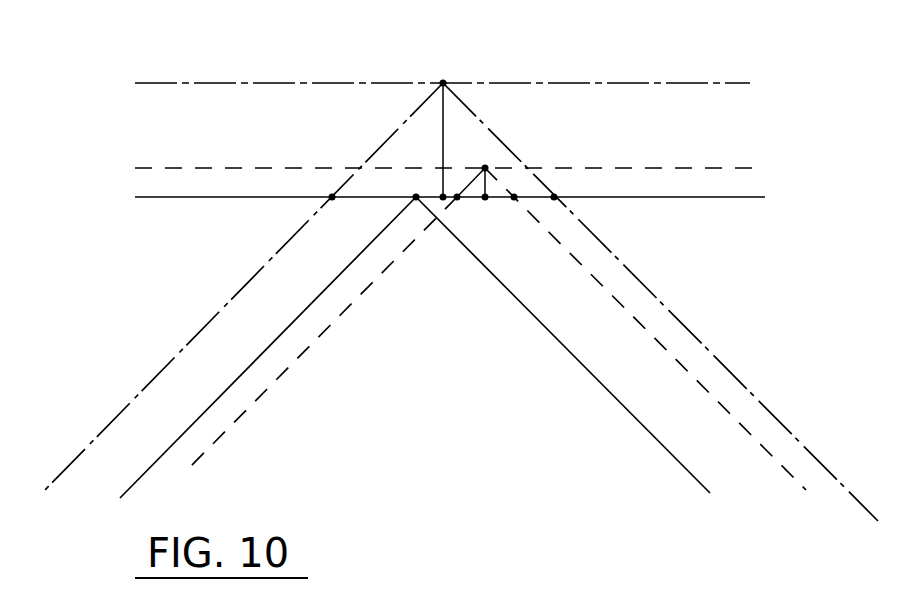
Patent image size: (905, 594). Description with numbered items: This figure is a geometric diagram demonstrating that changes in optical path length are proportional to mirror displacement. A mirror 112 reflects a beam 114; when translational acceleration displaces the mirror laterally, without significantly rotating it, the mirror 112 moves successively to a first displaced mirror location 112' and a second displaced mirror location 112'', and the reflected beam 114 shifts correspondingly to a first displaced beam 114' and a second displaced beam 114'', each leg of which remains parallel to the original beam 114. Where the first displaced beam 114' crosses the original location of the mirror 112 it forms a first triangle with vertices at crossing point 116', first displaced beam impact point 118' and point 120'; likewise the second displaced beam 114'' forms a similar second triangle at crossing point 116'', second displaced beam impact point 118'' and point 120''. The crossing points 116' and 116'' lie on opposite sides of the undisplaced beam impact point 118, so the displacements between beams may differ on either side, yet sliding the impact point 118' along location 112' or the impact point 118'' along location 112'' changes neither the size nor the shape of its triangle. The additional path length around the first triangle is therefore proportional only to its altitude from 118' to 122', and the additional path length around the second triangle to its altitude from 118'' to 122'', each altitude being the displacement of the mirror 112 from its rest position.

The mirror 112 is at (472, 196).
The first displaced mirror location 112' is at (474, 169).
The second displaced mirror location 112'' is at (475, 84).
The beam 114 is at (563, 345).
The first displaced beam 114' is at (337, 318).
The second displaced beam 114'' is at (645, 329).
The first crossing point 116' is at (446, 242).
The second crossing point 116'' is at (316, 235).
The undisplaced beam impact point 118 is at (270, 346).
The first displaced beam impact point 118' is at (516, 144).
The second displaced beam impact point 118'' is at (444, 52).
The first triangle vertex 120' is at (513, 229).
The second triangle vertex 120'' is at (598, 187).
The first triangle altitude foot 122' is at (471, 243).
The second triangle altitude foot 122'' is at (420, 142).